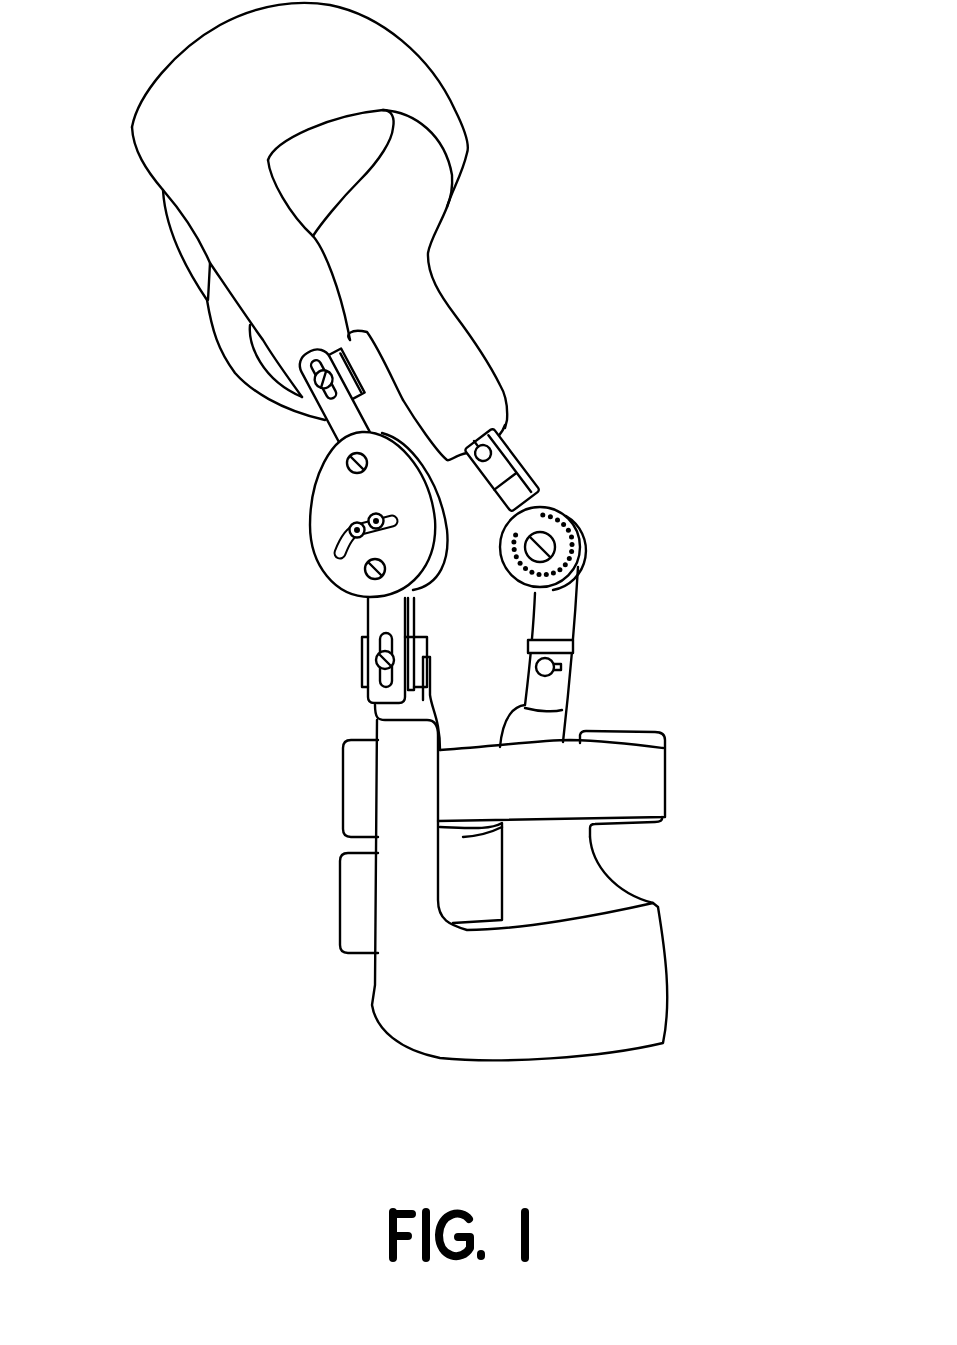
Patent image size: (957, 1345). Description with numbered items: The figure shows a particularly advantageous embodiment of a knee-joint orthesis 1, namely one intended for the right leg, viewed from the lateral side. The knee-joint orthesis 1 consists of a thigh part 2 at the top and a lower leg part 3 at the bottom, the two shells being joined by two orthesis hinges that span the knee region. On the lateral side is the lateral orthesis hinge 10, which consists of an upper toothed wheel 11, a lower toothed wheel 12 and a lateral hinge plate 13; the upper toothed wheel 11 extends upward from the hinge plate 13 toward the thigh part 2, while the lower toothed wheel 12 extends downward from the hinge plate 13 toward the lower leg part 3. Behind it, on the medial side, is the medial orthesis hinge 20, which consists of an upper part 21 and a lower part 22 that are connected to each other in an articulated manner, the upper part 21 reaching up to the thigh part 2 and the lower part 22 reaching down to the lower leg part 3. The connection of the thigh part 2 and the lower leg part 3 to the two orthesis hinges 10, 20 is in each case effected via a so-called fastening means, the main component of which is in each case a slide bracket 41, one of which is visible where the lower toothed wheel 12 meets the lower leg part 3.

The knee-joint orthesis 1 is at (445, 584).
The thigh part 2 is at (230, 62).
The lower leg part 3 is at (442, 1080).
The lateral orthesis hinge 10 is at (297, 551).
The upper toothed wheel 11 is at (343, 420).
The lower toothed wheel 12 is at (380, 620).
The lateral hinge plate 13 is at (337, 482).
The medial orthesis hinge 20 is at (616, 572).
The upper part 21 is at (540, 477).
The lower part 22 is at (555, 618).
The slide bracket 41 is at (365, 685).